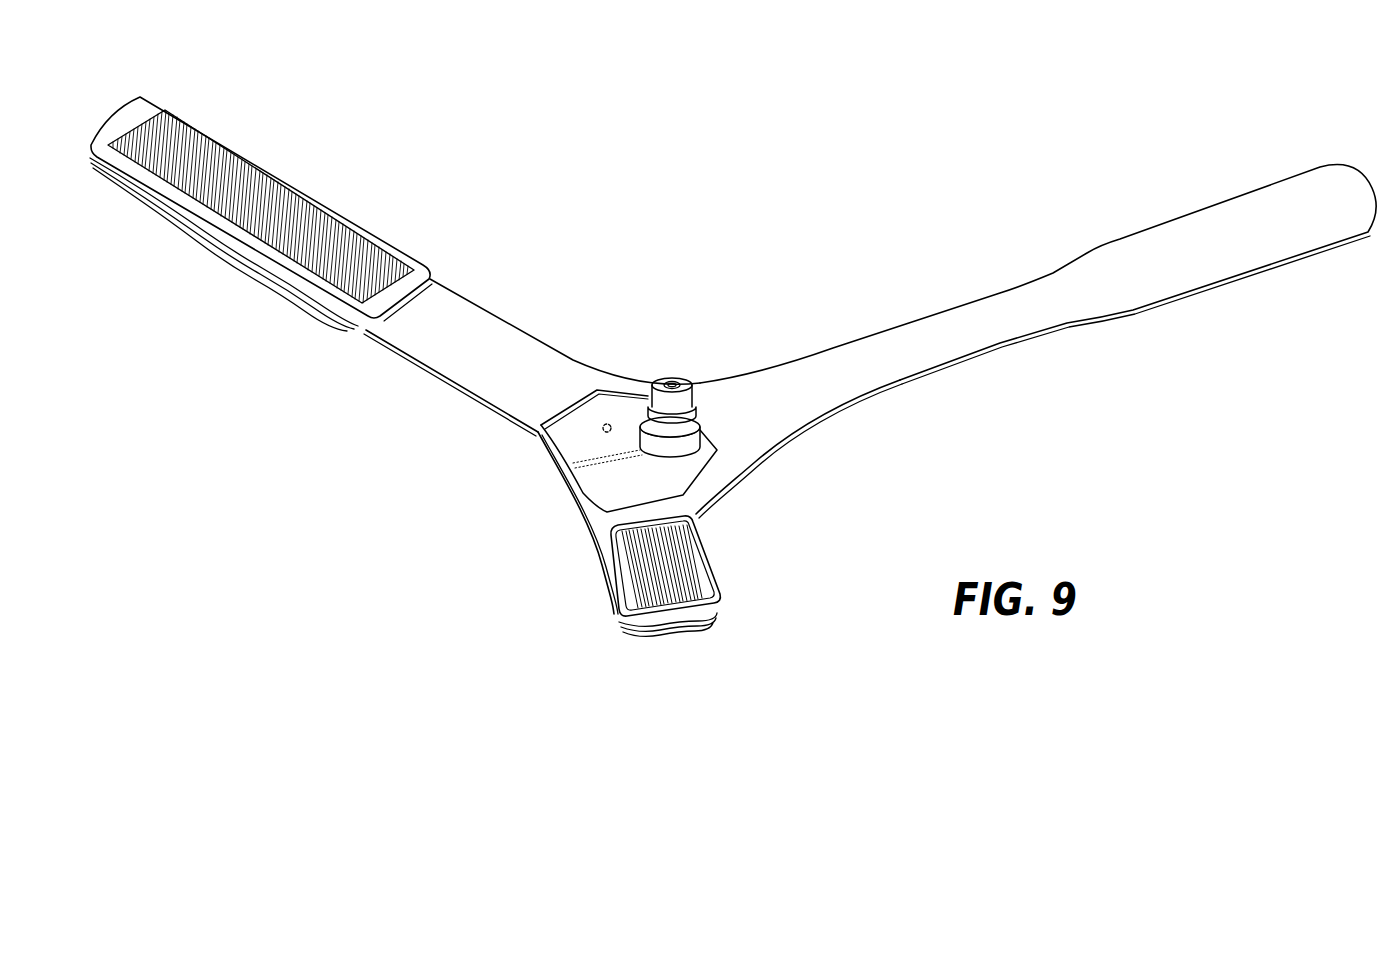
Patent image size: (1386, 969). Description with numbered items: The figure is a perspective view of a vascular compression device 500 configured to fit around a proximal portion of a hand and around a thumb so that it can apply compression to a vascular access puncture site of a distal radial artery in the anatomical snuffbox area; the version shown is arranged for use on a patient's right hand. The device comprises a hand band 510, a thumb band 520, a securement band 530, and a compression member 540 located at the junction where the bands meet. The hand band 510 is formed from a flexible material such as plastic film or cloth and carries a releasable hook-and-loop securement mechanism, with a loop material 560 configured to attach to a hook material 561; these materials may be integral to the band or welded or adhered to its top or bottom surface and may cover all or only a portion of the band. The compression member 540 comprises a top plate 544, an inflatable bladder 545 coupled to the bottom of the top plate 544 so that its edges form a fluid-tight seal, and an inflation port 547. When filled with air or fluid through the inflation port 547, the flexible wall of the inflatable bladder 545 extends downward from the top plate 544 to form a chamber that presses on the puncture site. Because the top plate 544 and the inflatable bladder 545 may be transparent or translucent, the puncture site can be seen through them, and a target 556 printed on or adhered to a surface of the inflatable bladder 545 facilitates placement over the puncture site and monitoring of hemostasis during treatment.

The vascular compression device 500 is at (843, 280).
The hand band 510 is at (404, 357).
The thumb band 520 is at (930, 362).
The securement band 530 is at (602, 572).
The compression member 540 is at (616, 444).
The top plate 544 is at (678, 470).
The inflatable bladder 545 is at (553, 484).
The inflation port 547 is at (712, 408).
The target 556 is at (602, 429).
The loop material 560 is at (241, 253).
The hook material 561 is at (260, 187).